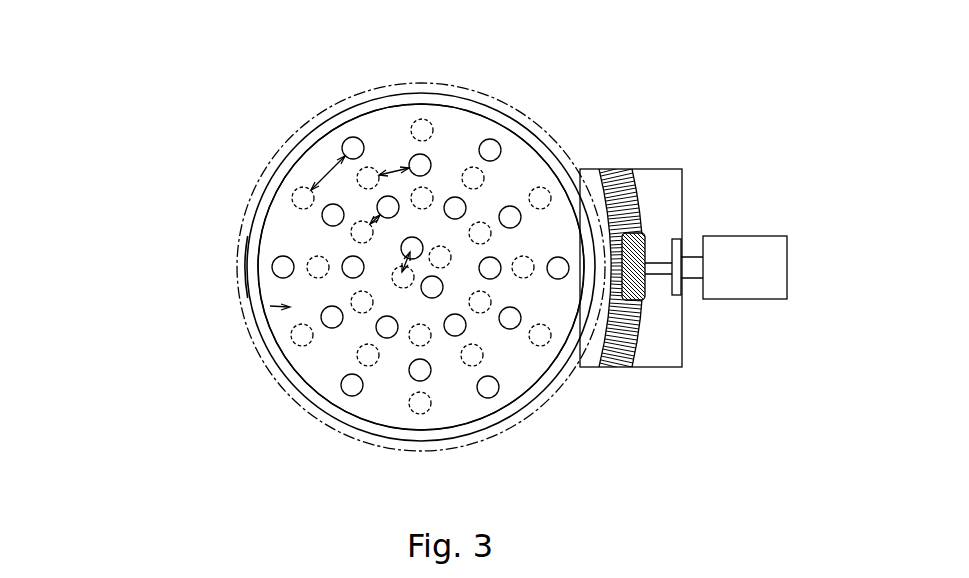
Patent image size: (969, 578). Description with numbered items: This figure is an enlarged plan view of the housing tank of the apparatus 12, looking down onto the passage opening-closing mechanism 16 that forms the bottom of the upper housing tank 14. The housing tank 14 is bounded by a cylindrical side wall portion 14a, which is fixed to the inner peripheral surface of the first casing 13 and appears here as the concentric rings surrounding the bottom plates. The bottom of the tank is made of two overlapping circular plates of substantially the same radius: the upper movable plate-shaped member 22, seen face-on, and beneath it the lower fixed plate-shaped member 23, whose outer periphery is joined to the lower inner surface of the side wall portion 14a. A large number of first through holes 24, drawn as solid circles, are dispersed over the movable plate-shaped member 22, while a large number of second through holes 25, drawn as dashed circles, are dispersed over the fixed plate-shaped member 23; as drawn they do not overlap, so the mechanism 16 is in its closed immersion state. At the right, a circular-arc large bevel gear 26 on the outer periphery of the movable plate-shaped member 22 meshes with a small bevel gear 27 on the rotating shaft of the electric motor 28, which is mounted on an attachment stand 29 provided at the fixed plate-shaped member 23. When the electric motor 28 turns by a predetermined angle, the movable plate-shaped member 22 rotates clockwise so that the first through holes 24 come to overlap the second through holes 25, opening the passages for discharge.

The rotary drum / sorting device 12 is at (259, 104).
The first casing 13 is at (513, 104).
The upper housing tank 14 is at (251, 214).
The cylindrical side wall portion 14a is at (248, 242).
The passage opening-closing mechanism 16 is at (289, 307).
The movable plate-shaped member 22 is at (280, 307).
The fixed plate-shaped member 23 is at (313, 360).
The first through holes 24 is at (352, 388).
The second through holes 25 is at (368, 364).
The large bevel gear 26 is at (612, 172).
The small bevel gear 27 is at (636, 225).
The electric motor 28 is at (746, 236).
The attachment stand 29 is at (671, 335).